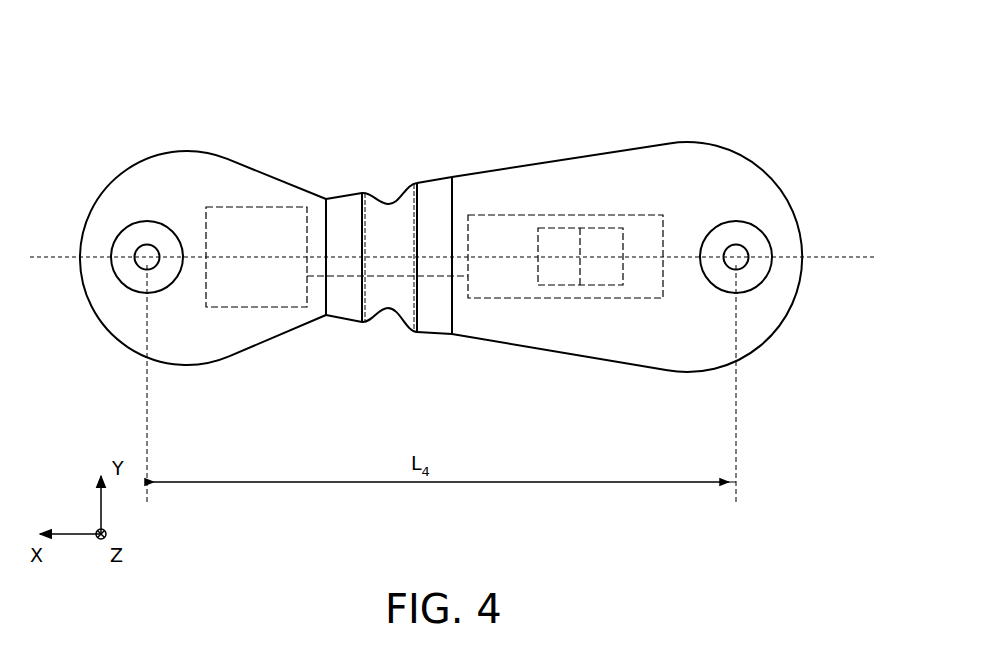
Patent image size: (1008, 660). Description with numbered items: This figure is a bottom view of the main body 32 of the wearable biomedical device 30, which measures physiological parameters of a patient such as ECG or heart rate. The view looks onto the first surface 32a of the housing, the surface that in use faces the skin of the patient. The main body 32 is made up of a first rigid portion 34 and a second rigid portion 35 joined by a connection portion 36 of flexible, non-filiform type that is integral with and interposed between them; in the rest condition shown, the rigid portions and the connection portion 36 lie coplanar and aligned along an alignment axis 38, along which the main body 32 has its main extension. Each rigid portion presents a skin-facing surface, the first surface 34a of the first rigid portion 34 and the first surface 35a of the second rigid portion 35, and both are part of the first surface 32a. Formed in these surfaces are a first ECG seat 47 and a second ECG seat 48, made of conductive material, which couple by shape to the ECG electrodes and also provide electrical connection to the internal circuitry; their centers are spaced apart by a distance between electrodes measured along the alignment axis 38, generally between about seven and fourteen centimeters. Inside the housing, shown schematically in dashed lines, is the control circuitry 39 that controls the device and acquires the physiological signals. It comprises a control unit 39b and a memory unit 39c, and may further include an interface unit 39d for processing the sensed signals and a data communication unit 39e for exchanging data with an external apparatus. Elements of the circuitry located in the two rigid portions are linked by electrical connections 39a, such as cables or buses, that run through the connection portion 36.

The biomedical device 30 is at (140, 99).
The main body 32 is at (615, 139).
The first surface 32a is at (504, 184).
The first rigid portion 34 is at (560, 352).
The first surface of first rigid portion 34a is at (700, 180).
The second rigid portion 35 is at (213, 348).
The first surface of second rigid portion 35a is at (148, 183).
The connection portion 36 is at (347, 323).
The alignment axis 38 is at (828, 257).
The control circuitry 39 is at (452, 175).
The electrical connections 39a is at (437, 277).
The control unit 39b is at (610, 228).
The memory unit 39c is at (560, 229).
The interface unit 39d is at (603, 280).
The data communication unit 39e is at (560, 279).
The first ECG seat 47 is at (753, 238).
The second ECG seat 48 is at (122, 246).